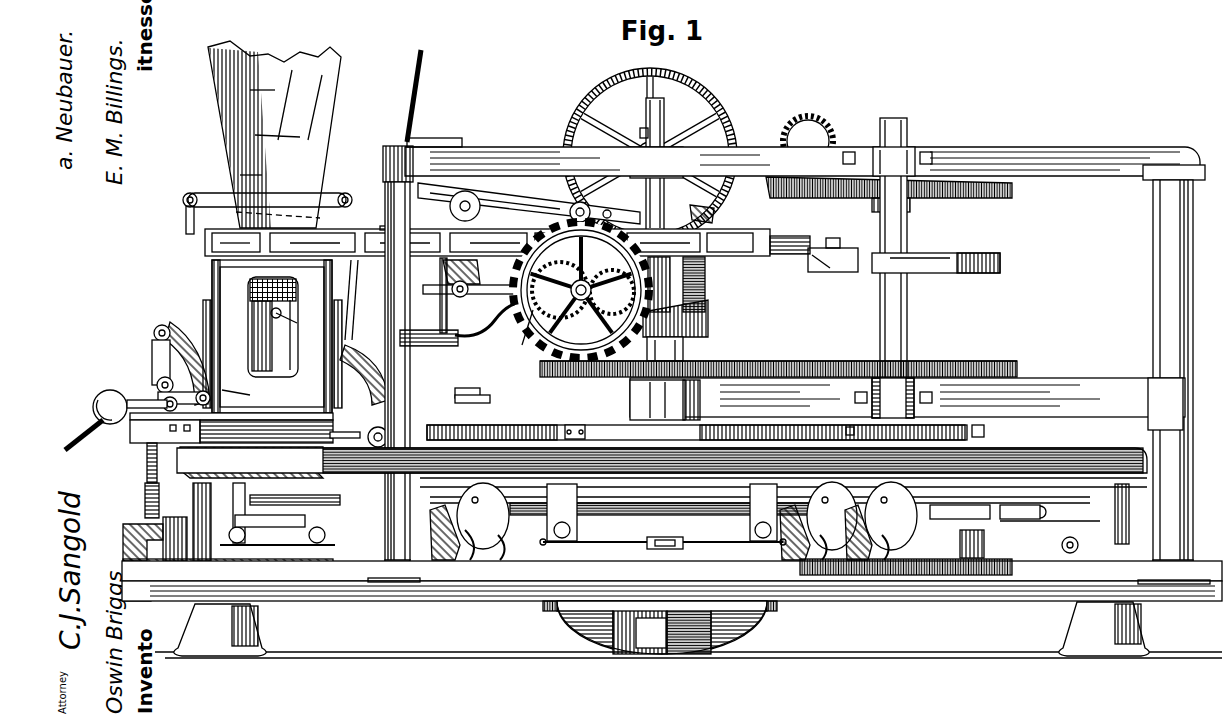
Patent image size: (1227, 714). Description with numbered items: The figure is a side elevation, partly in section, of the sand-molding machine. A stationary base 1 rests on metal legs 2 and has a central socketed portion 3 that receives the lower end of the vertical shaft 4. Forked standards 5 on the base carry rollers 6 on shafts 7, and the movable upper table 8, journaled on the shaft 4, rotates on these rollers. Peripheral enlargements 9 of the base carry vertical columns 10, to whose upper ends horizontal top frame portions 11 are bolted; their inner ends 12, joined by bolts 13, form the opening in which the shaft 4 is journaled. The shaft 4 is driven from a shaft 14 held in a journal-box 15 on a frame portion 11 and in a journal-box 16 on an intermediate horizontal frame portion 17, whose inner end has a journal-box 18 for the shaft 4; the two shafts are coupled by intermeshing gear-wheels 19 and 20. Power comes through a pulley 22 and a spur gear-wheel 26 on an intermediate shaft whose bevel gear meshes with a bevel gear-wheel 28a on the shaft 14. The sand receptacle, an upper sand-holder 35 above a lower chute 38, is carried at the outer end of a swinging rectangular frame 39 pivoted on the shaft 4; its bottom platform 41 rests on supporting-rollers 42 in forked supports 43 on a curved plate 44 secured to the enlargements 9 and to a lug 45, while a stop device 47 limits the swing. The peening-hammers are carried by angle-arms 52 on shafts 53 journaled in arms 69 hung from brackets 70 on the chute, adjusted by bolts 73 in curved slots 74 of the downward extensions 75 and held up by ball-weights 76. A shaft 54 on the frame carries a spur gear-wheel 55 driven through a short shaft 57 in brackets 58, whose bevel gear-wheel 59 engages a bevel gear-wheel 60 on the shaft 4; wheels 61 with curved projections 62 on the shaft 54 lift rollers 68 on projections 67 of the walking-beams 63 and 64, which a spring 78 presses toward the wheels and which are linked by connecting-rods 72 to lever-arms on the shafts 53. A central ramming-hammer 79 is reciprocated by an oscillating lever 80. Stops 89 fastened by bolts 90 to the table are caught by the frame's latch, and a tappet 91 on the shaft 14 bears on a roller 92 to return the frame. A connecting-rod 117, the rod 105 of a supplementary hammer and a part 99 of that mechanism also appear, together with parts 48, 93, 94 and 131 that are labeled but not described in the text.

The stationary base 1 is at (926, 582).
The metal legs 2 is at (228, 634).
The central socketed portion 3 is at (686, 174).
The vertical shaft 4 is at (716, 215).
The upright bifurcated or forked standards 5 is at (466, 540).
The roller 6 is at (687, 515).
The shafts 7 is at (673, 531).
The movable upper table 8 is at (1066, 448).
The peripheral enlargements 9 is at (382, 589).
The vertical columns or frame portions 10 is at (1155, 468).
The horizontal top frame portions 11 is at (493, 152).
The inner ends 12 is at (662, 145).
The bolts 13 is at (645, 128).
The shaft 14 is at (906, 126).
The journal-box 15 is at (905, 162).
The journal-box 16 is at (896, 372).
The intermediate horizontal frame portion 17 is at (907, 404).
The journal-box 18 is at (645, 401).
The gear-wheel 19 is at (690, 362).
The gear-wheel 20 is at (960, 361).
The pulley 22 is at (690, 90).
The spur gear-wheel 26 is at (814, 128).
The bevel gear-wheel 28a is at (1005, 196).
The upper sand-holder 35 is at (225, 86).
The lower chute 38 is at (250, 280).
The rectangular frame 39 is at (205, 241).
The bottom platform or base 41 is at (152, 441).
The supporting-rollers 42 is at (148, 456).
The forked supports 43 is at (146, 492).
The curved plate 44 is at (221, 549).
The peripheral enlargement or lug 45 is at (148, 513).
The stop device 47 is at (390, 442).
The shaft 48 is at (361, 438).
The angle-arms 52 is at (195, 345).
The shafts 53 is at (162, 390).
The shaft 54 is at (545, 322).
The spur gear-wheel 55 is at (447, 378).
The short shaft 57 is at (251, 455).
The downwardly-extending brackets 58 is at (236, 382).
The bevel gear-wheel 59 is at (707, 280).
The bevel gear-wheel 60 is at (706, 322).
The wheels 61 is at (548, 362).
The curved peripheral projections 62 is at (612, 343).
The walking-beam 63 is at (206, 194).
The walking-beam 64 is at (480, 202).
The short projection 67 is at (611, 214).
The roller 68 is at (575, 207).
The arms 69 is at (152, 342).
The brackets 70 is at (203, 322).
The connecting-rods 72 is at (186, 221).
The bolts 73 is at (96, 399).
The curved slots 74 is at (158, 372).
The downward extensions 75 is at (138, 402).
The counterbalancing ball-weights 76 is at (100, 420).
The spring 78 is at (385, 232).
The central ramming-hammer 79 is at (283, 340).
The oscillating lever 80 is at (458, 340).
The stops 89 is at (570, 425).
The bolts 90 is at (585, 428).
The tappet 91 is at (1002, 262).
The roller 92 is at (828, 274).
The rod 93 is at (486, 285).
The bracket 94 is at (461, 271).
The part of supplementary-hammer mechanism 99 is at (412, 140).
The rod 105 is at (447, 318).
The connecting-rod 117 is at (425, 84).
The links 131 is at (238, 496).